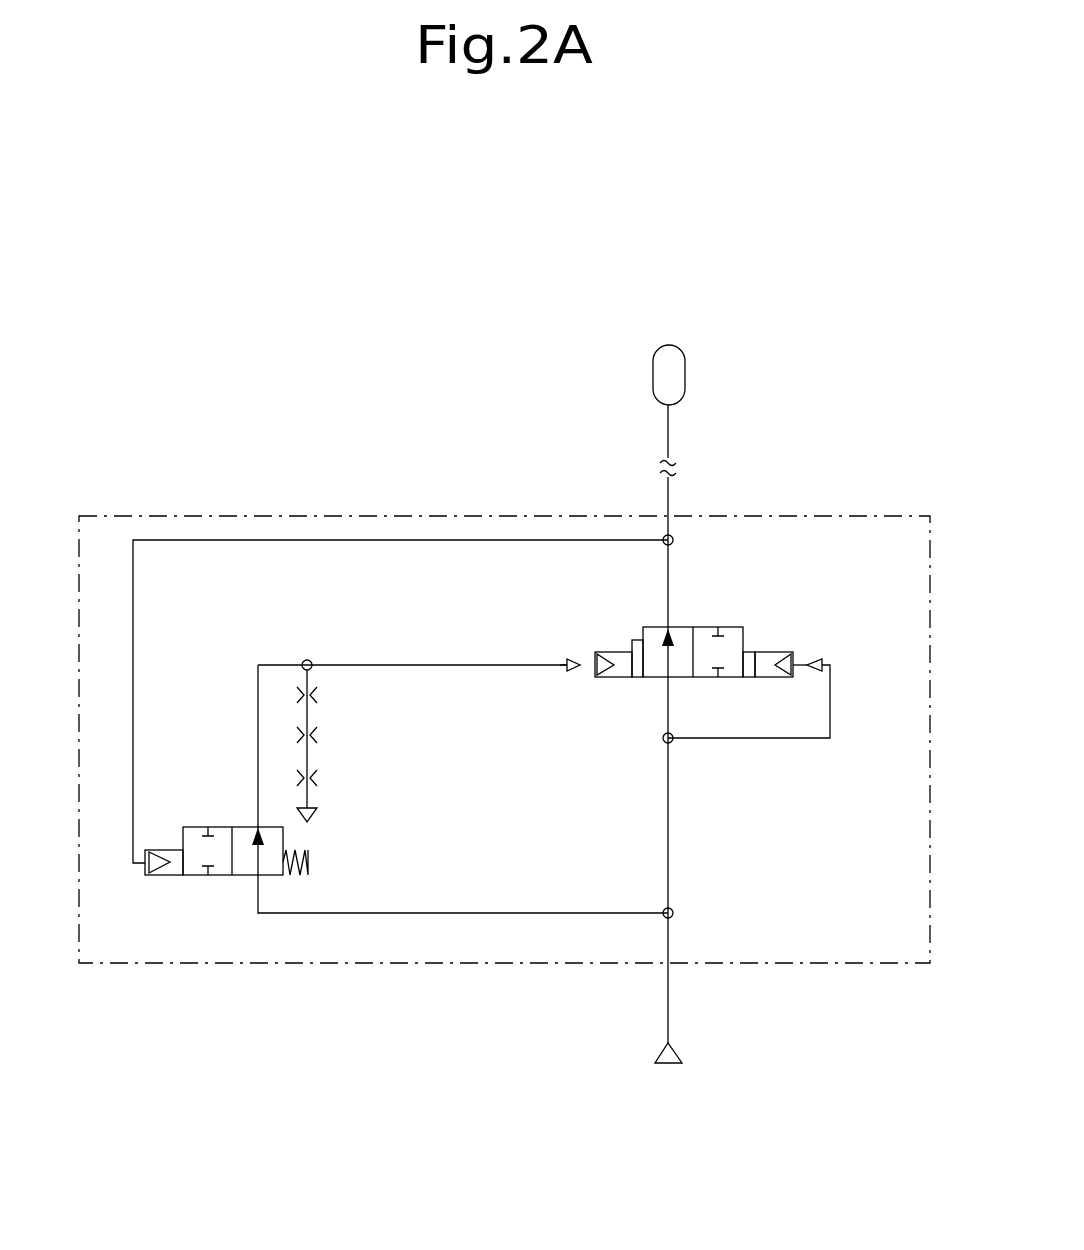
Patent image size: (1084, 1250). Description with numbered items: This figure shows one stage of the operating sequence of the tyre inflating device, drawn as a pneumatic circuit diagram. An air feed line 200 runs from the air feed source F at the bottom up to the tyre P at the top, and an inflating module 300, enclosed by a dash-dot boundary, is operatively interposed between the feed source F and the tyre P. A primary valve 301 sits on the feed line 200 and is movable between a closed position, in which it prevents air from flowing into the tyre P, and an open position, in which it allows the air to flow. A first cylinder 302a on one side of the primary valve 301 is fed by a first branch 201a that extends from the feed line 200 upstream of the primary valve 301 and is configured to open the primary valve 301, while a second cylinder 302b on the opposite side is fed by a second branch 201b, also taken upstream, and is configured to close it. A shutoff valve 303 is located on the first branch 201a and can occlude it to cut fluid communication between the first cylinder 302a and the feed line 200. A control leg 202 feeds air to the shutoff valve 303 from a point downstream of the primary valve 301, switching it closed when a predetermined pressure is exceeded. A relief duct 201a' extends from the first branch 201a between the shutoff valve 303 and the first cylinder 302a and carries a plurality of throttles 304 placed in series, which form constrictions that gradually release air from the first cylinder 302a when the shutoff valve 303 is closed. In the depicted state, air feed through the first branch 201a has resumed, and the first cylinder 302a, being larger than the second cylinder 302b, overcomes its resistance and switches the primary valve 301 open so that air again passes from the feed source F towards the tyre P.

The inflating module 300 is at (112, 492).
The air feed line 200 is at (678, 492).
The tyre P is at (685, 375).
The air feed source F is at (670, 1063).
The control leg 202 is at (133, 688).
The shutoff valve 303 is at (202, 890).
The first branch 201a is at (463, 865).
The relief duct 201a' is at (380, 672).
The throttles 304 is at (320, 748).
The primary valve 301 is at (741, 617).
The first cylinder 302a is at (620, 652).
The second cylinder 302b is at (787, 652).
The second branch 201b is at (830, 700).